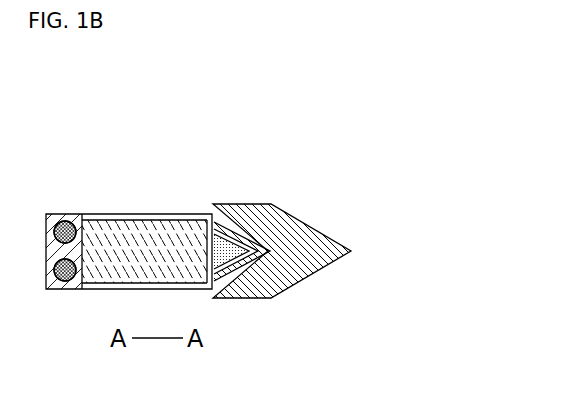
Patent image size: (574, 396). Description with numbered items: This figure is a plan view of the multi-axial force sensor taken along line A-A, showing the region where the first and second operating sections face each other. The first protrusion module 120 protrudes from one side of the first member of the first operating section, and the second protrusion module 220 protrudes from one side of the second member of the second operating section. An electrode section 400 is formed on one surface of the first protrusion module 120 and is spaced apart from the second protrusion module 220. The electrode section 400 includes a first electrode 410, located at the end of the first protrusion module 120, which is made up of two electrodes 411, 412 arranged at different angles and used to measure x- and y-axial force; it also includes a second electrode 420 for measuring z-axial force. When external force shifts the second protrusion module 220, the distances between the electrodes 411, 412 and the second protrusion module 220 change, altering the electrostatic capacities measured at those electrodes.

The first protrusion module 120 is at (107, 214).
The second protrusion module 220 is at (318, 232).
The electrode section 400 is at (218, 180).
The first electrode 410 is at (243, 200).
The electrode 411 is at (233, 232).
The electrode 412 is at (249, 255).
The second electrode 420 is at (220, 250).